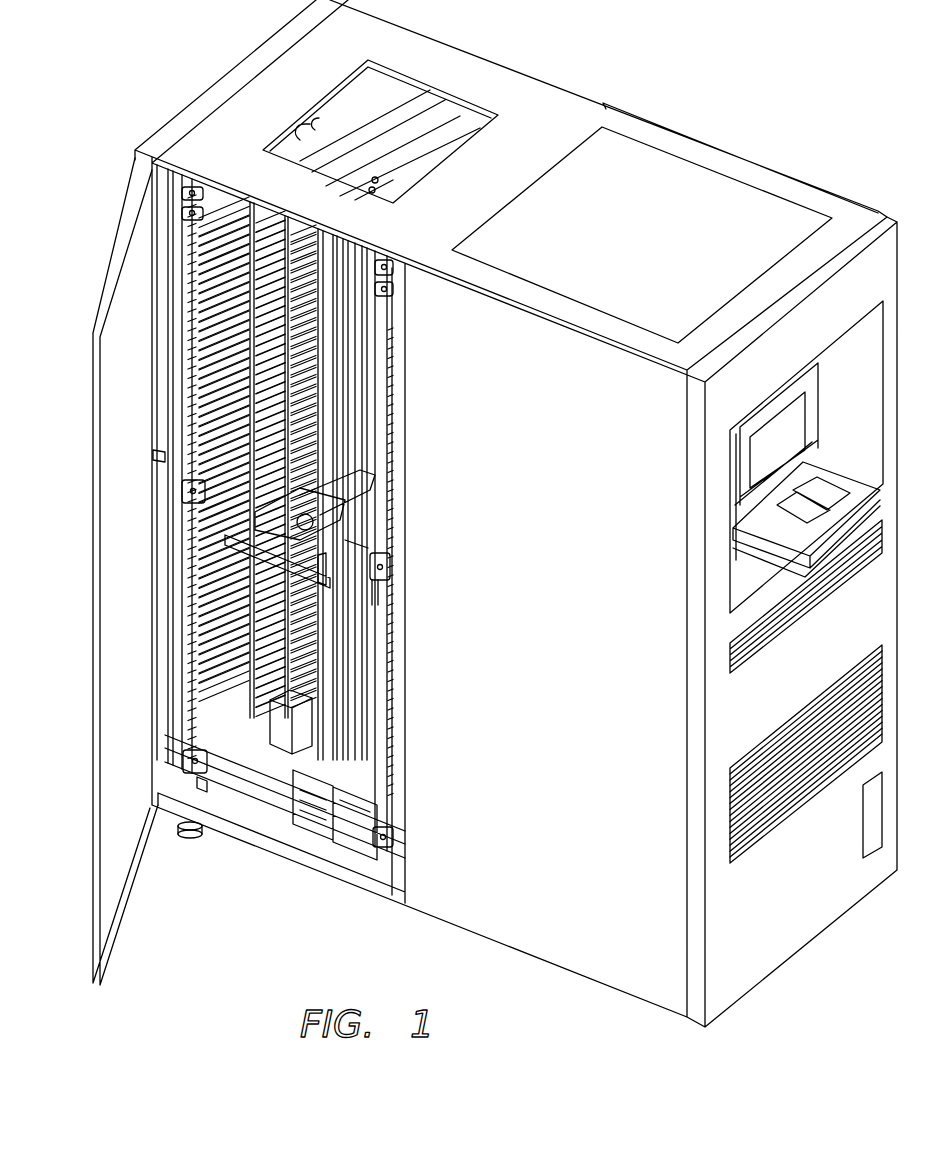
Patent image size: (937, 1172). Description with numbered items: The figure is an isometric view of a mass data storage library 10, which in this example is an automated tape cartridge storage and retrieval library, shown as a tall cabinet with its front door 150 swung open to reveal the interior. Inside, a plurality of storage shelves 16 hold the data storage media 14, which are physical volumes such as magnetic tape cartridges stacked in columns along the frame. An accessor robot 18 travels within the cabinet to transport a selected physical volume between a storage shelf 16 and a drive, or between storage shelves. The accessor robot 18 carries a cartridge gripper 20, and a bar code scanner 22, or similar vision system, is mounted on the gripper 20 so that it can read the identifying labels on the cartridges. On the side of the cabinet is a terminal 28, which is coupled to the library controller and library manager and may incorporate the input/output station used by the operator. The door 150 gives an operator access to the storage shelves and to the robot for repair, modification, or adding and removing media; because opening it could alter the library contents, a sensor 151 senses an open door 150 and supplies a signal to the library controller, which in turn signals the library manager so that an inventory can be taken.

The mass data storage library 10 is at (556, 104).
The data storage media 14 is at (213, 300).
The storage shelves 16 is at (128, 406).
The accessor robot 18 is at (281, 780).
The cartridge gripper 20 is at (385, 578).
The bar code scanner 22 is at (365, 500).
The terminal 28 is at (865, 496).
The door 150 is at (95, 486).
The sensor 151 is at (385, 264).